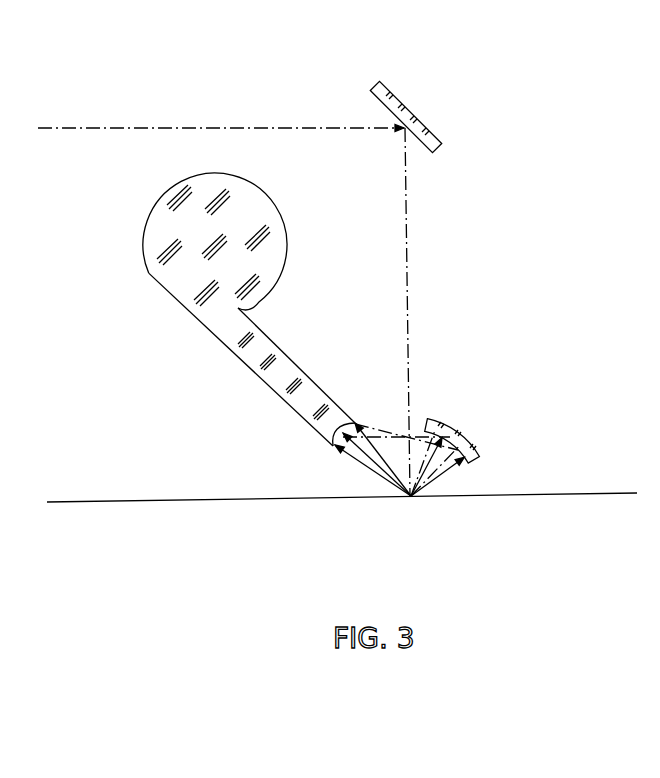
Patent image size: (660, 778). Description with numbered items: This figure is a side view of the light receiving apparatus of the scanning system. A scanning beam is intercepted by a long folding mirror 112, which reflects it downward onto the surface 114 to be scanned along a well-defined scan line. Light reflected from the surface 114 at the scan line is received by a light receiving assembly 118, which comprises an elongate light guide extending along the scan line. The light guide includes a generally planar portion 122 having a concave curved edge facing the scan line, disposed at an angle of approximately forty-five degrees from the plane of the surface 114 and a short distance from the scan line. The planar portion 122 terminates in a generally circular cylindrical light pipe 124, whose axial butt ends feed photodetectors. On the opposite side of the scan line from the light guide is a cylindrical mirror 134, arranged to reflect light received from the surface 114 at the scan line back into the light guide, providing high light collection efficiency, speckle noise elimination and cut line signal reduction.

The long folding mirror 112 is at (397, 104).
The surface to be scanned 114 is at (578, 493).
The light receiving assembly 118 is at (337, 447).
The planar portion 122 is at (283, 379).
The circular cylindrical light pipe 124 is at (155, 256).
The cylindrical mirror 134 is at (452, 437).